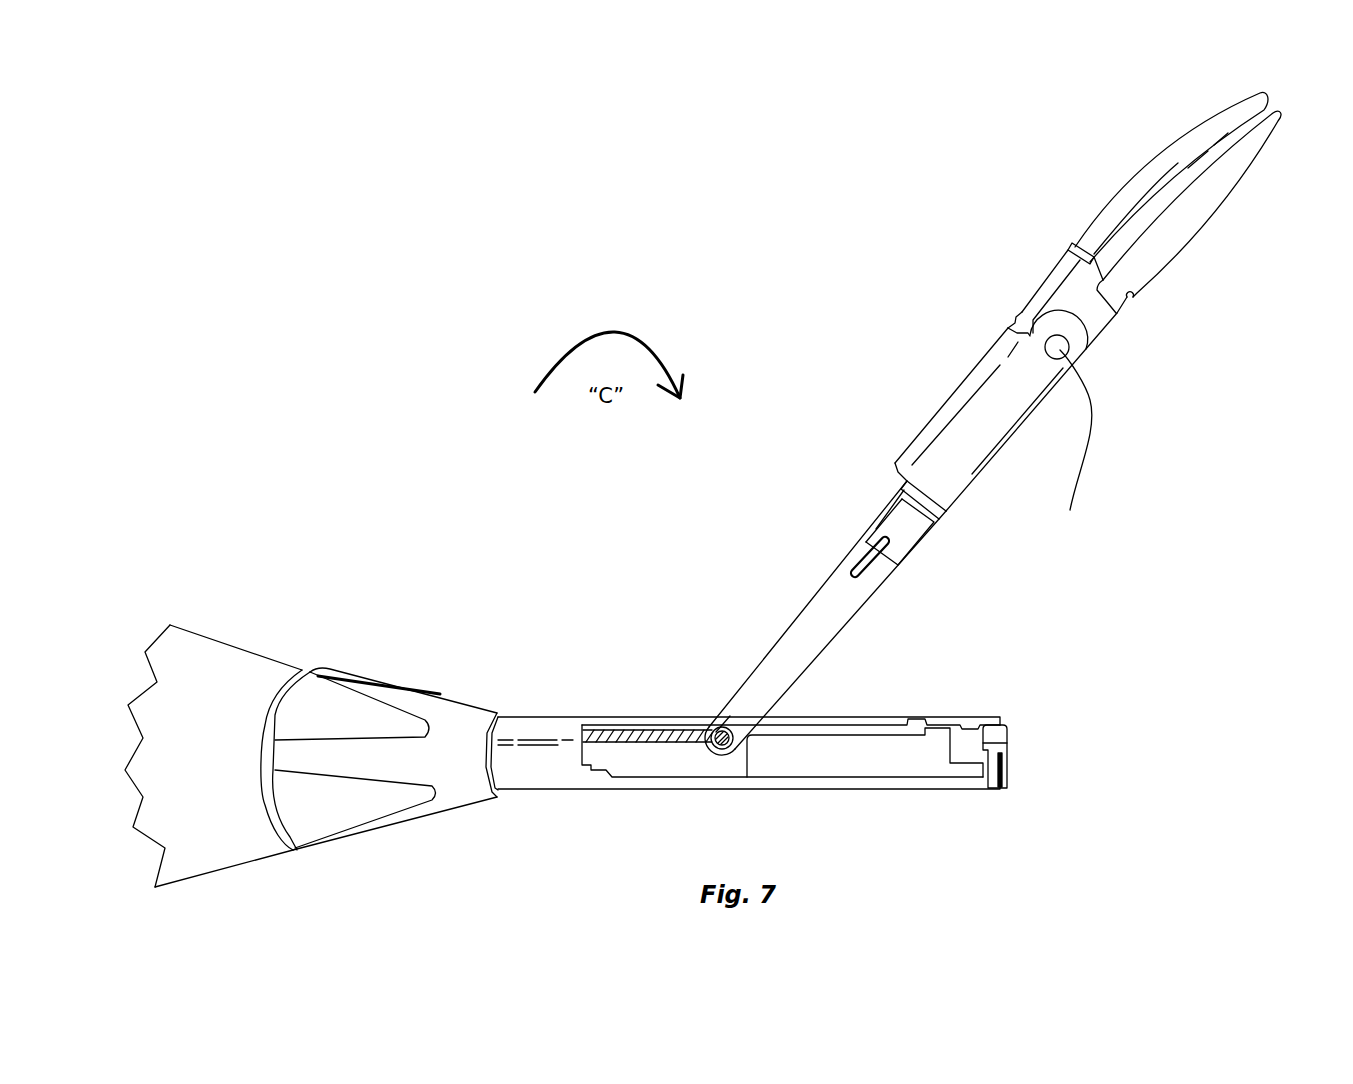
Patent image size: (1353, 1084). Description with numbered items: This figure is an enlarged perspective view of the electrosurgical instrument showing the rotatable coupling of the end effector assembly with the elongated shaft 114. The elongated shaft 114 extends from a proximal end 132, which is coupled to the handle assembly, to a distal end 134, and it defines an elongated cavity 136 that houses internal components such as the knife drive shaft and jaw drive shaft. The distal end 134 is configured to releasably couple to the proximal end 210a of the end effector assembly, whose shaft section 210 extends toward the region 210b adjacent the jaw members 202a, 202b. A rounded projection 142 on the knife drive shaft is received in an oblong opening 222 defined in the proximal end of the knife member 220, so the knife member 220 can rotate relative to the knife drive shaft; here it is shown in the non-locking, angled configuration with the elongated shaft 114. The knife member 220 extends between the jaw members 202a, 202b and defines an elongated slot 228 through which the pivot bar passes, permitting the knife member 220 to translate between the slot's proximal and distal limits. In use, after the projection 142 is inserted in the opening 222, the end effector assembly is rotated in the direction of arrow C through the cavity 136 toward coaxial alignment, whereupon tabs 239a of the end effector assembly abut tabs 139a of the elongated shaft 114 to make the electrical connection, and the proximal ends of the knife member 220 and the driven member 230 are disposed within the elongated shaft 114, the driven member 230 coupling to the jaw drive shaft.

The elongated shaft 114 is at (560, 712).
The proximal end of elongated shaft 132 is at (528, 780).
The distal end of elongated shaft 134 is at (984, 789).
The elongated cavity 136 is at (865, 752).
The tab of elongated shaft 139a is at (1008, 766).
The rounded projection 142 is at (712, 734).
The jaw member 202a is at (1128, 187).
The jaw member 202b is at (1192, 230).
The shaft section of end effector assembly 210 is at (957, 400).
The proximal end of end effector assembly 210a is at (903, 452).
The distal portion of jaw housing 210b is at (998, 335).
The knife member 220 is at (788, 614).
The oblong opening 222 is at (728, 727).
The elongated slot 228 is at (860, 583).
The driven member 230 is at (900, 535).
The tab of end effector assembly 239a is at (905, 482).